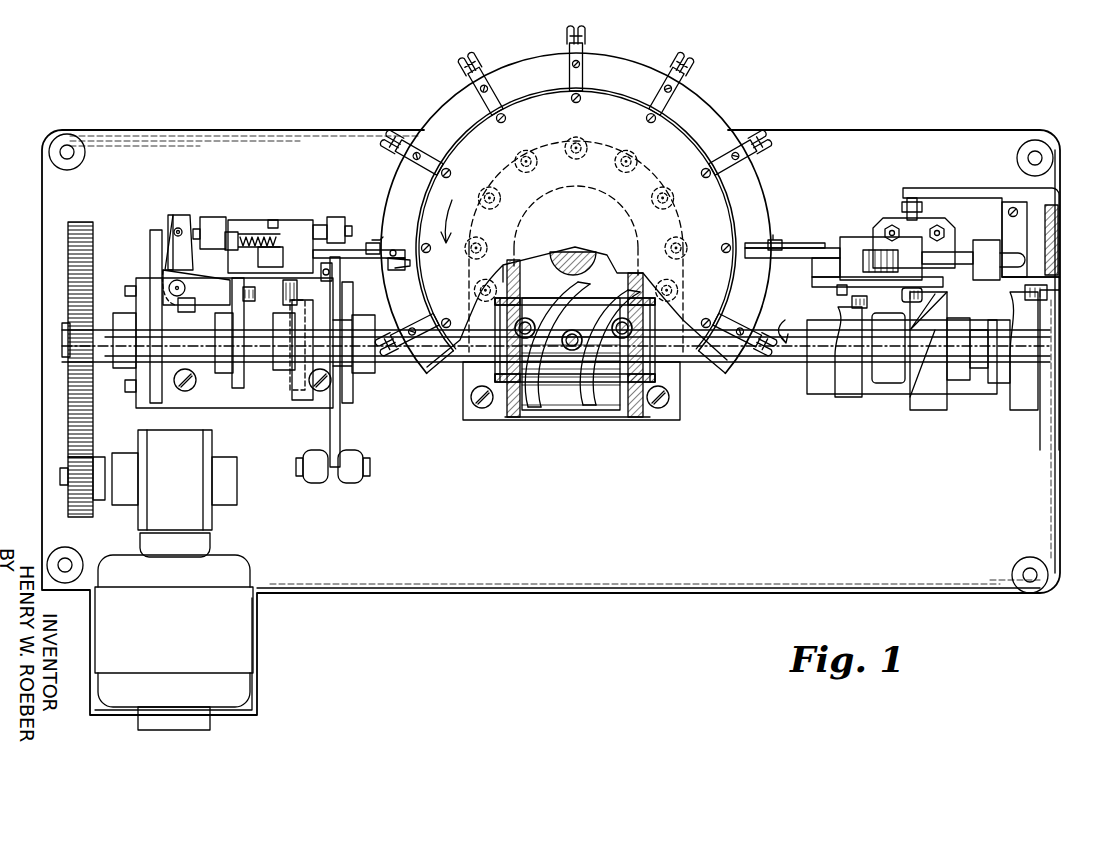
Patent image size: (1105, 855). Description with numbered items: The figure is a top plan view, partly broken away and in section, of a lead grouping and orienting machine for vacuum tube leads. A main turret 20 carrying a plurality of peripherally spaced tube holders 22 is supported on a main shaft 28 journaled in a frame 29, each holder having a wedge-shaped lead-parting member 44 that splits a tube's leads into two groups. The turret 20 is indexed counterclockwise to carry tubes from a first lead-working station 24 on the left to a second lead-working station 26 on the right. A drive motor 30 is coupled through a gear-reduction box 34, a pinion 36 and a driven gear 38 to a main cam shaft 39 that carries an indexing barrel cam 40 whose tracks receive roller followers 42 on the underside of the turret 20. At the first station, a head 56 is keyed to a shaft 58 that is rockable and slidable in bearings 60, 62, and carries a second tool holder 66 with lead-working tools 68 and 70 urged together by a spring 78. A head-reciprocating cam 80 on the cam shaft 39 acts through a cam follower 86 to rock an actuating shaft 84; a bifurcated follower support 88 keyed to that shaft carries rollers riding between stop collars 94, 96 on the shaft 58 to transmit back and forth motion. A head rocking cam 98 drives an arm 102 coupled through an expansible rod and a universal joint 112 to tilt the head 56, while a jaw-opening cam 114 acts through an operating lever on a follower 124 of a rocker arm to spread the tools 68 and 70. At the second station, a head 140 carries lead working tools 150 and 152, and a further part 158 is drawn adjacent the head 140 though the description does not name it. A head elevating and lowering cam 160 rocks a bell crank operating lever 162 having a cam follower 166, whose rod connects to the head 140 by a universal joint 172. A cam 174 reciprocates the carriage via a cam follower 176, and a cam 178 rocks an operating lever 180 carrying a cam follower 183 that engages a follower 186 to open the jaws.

The main turret 20 is at (539, 48).
The tube holders 22 is at (417, 124).
The first lead-working station 24 is at (287, 158).
The second lead-working station 26 is at (913, 153).
The main shaft 28 is at (580, 250).
The frame 29 is at (160, 253).
The drive motor 30 is at (240, 629).
The gear-reduction box 34 is at (190, 508).
The pinion 36 is at (70, 508).
The driven gear 38 is at (70, 378).
The main cam shaft 39 is at (465, 358).
The indexing barrel cam 40 is at (604, 392).
The roller followers 42 is at (526, 318).
The lead-parting member 44 is at (478, 66).
The head 56 is at (292, 220).
The shaft 58 is at (320, 222).
The bearing 60 is at (208, 217).
The bearing 62 is at (333, 217).
The second tool holder 66 is at (410, 262).
The lead-working tool 68 is at (370, 240).
The lead-working tool 70 is at (390, 250).
The spring 78 is at (260, 235).
The head-reciprocating cam 80 is at (240, 390).
The actuating shaft 84 is at (180, 288).
The cam follower 86 is at (250, 290).
The bifurcated follower support 88 is at (186, 313).
The stop collar 94 is at (168, 215).
The stop collar 96 is at (190, 214).
The head rocking cam 98 is at (354, 390).
The arm 102 is at (342, 432).
The universal joint 112 is at (333, 275).
The jaw-opening cam 114 is at (302, 402).
The follower 124 is at (288, 305).
The head 140 is at (860, 237).
The lead working tool 150 is at (815, 245).
The lead working tool 152 is at (775, 240).
The rod 158 is at (960, 252).
The head elevating and lowering cam 160 is at (1025, 405).
The bell crank operating lever 162 is at (990, 188).
The cam follower 166 is at (1048, 295).
The universal joint 172 is at (922, 207).
The cam 174 is at (940, 405).
The cam follower 176 is at (925, 298).
The cam 178 is at (850, 400).
The operating lever 180 is at (835, 290).
The cam follower 183 is at (852, 300).
The follower 186 is at (875, 305).